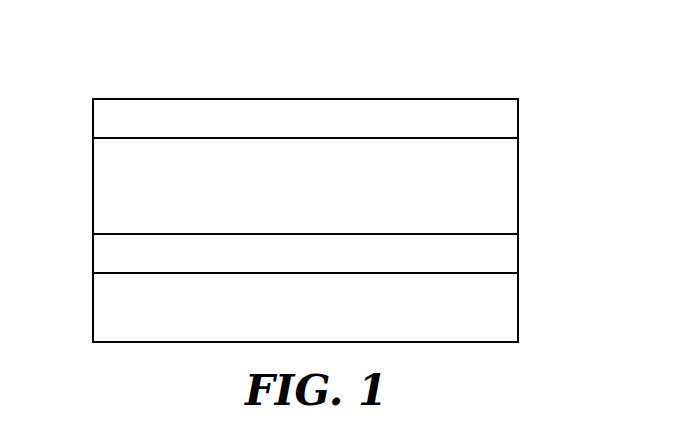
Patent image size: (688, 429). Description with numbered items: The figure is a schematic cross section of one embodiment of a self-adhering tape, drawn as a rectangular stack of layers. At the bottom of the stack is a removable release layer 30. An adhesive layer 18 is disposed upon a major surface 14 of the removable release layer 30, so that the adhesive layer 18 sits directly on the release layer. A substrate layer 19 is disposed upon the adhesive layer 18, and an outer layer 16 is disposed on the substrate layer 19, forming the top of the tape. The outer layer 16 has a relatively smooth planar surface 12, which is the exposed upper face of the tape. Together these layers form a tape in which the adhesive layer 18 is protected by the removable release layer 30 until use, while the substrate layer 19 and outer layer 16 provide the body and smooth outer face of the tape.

The planar surface 12 is at (114, 99).
The major surface 14 is at (115, 273).
The outer layer 16 is at (503, 118).
The adhesive layer 18 is at (503, 259).
The substrate layer 19 is at (503, 192).
The removable release layer 30 is at (503, 310).